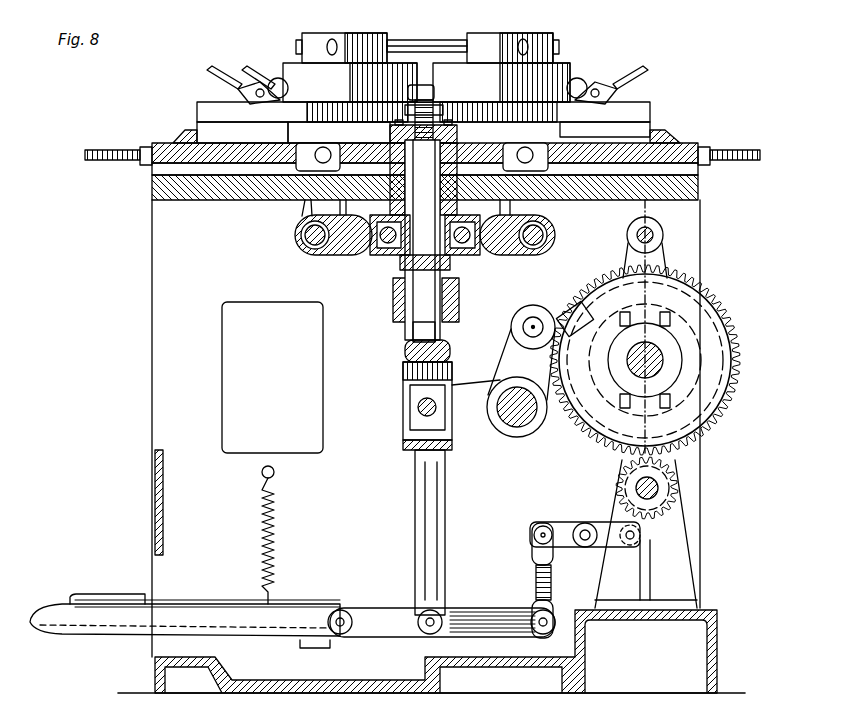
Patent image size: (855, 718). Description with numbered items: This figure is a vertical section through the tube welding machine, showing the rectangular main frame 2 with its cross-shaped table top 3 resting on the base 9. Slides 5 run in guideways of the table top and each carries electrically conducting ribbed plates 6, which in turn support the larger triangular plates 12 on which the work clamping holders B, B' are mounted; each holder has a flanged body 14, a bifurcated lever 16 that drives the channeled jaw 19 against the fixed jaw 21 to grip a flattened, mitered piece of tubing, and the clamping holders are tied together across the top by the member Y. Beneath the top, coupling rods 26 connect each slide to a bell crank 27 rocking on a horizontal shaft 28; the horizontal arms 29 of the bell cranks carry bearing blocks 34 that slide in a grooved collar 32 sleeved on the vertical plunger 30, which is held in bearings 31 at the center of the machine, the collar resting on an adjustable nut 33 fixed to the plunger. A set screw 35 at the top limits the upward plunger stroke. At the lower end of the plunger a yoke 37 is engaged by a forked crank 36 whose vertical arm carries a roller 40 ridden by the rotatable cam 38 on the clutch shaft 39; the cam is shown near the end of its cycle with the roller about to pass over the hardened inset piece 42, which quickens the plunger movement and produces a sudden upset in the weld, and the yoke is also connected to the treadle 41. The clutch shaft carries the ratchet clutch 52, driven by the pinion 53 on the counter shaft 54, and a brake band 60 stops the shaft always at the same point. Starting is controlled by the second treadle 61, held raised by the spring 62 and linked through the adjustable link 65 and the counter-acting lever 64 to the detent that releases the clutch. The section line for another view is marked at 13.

The main frame 2 is at (152, 408).
The table top 3 is at (152, 190).
The slide 5 is at (152, 143).
The ribbed plate 6 is at (200, 130).
The base 9 is at (156, 676).
The plate 12 is at (205, 102).
The center line / pedestal 13 is at (652, 126).
The flanged body 14 is at (278, 78).
The bifurcated lever 16 is at (427, 71).
The channeled jaw 19 is at (520, 62).
The fixed jaw 21 is at (548, 40).
The coupling rod 26 is at (85, 157).
The bell crank 27 is at (305, 219).
The shaft 28 is at (300, 238).
The horizontal arm 29 is at (345, 255).
The vertical plunger 30 is at (441, 335).
The bearing 31 is at (398, 156).
The grooved collar 32 is at (490, 254).
The adjustable nut 33 is at (452, 268).
The bearing block 34 is at (385, 255).
The set screw 35 is at (432, 93).
The forked crank 36 is at (403, 398).
The yoke 37 is at (403, 446).
The rotatable cam 38 is at (628, 360).
The clutch shaft 39 is at (663, 360).
The roller 40 is at (540, 312).
The treadle 41 is at (383, 610).
The hardened inset piece 42 is at (568, 300).
The ratchet clutch 52 is at (714, 428).
The drive pinion 53 is at (620, 490).
The counter shaft 54 is at (660, 488).
The brake band 60 is at (718, 385).
The treadle 61 is at (124, 596).
The spring 62 is at (276, 545).
The counter-acting lever 64 is at (562, 524).
The adjustable link 65 is at (535, 578).
The clamping holder B is at (392, 21).
The clamping holder B' is at (428, 21).
The tie bar Y is at (412, 40).